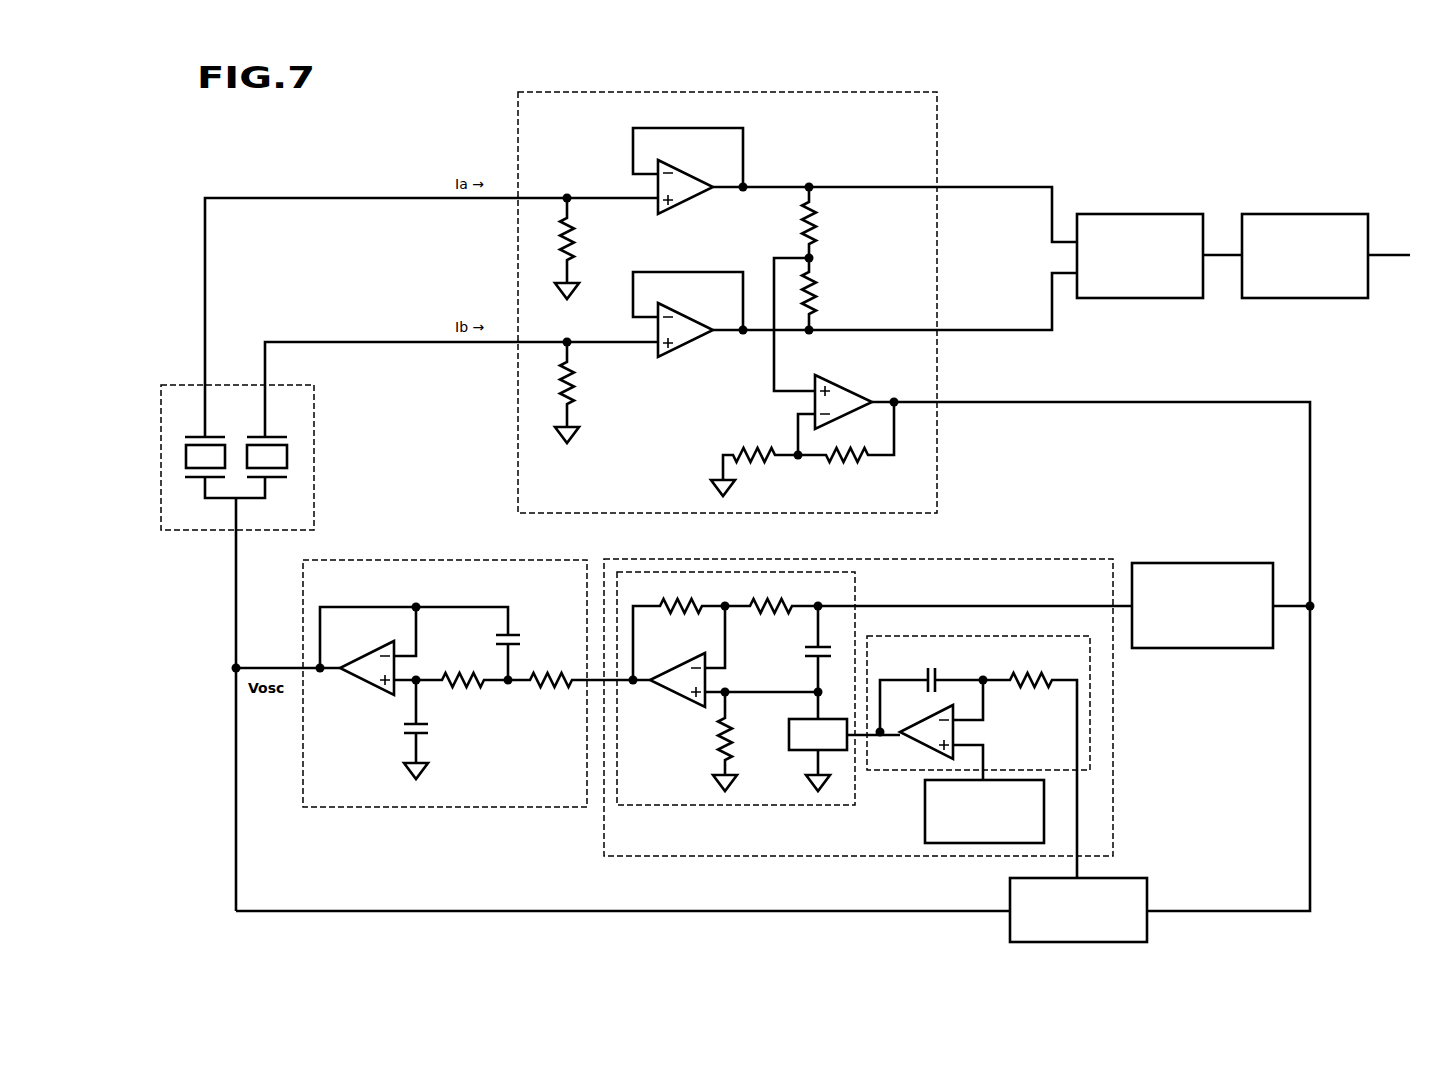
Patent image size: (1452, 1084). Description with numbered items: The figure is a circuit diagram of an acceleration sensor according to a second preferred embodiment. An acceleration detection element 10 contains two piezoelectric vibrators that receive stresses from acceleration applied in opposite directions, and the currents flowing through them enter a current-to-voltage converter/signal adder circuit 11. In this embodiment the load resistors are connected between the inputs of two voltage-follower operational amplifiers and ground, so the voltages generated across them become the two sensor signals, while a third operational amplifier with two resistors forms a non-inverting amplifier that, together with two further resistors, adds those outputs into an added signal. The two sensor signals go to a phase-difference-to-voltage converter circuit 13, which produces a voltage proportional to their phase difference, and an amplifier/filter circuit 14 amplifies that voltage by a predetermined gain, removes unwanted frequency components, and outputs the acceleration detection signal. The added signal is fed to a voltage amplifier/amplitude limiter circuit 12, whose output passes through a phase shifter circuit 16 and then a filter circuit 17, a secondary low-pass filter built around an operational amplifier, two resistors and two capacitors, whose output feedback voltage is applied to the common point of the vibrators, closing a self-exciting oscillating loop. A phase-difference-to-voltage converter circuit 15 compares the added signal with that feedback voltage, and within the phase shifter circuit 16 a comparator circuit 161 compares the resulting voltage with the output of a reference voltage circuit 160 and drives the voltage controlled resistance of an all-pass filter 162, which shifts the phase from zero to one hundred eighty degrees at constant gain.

The acceleration detection element 10 is at (315, 440).
The current-to-voltage converter/signal adder circuit 11 is at (937, 122).
The voltage amplifier/amplitude limiter circuit 12 is at (1203, 563).
The phase-difference-to-voltage converter circuit 13 is at (1140, 214).
The amplifier/filter circuit 14 is at (1310, 214).
The phase-difference-to-voltage converter circuit 15 is at (1146, 877).
The phase shifter circuit 16 is at (891, 697).
The filter circuit 17 is at (425, 560).
The reference voltage circuit 160 is at (925, 823).
The comparator circuit 161 is at (1090, 722).
The all-pass filter 162 is at (857, 589).